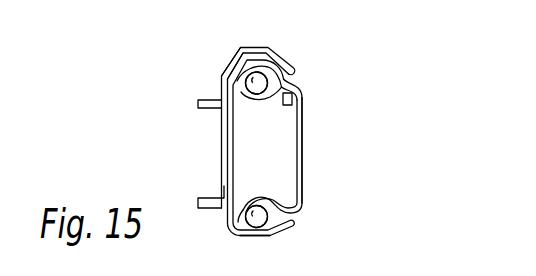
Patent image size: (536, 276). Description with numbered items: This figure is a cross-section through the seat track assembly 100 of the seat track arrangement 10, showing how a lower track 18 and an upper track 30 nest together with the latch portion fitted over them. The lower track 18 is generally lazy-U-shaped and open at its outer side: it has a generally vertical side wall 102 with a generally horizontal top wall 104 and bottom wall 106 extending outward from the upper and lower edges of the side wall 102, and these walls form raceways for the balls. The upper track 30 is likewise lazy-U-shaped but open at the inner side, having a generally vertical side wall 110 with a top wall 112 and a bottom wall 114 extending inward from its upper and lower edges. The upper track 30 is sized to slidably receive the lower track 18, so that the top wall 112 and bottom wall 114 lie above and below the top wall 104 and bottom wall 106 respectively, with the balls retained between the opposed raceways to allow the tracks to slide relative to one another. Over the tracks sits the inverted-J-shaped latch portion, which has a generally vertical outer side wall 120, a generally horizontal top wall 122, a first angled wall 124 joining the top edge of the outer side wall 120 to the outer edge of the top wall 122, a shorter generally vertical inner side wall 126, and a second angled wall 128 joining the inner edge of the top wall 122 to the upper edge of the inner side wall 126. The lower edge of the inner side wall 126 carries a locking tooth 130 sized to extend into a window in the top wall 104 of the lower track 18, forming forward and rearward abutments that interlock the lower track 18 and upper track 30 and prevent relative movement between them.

The drawer slide assembly 10 is at (508, 275).
The lower track 18 is at (303, 177).
The upper track 30 is at (258, 45).
The slide assembly 100 is at (392, 84).
The side wall 102 is at (305, 145).
The top wall 104 is at (261, 106).
The bottom wall 106 is at (258, 200).
The side wall 110 is at (220, 160).
The top wall 112 is at (225, 63).
The bottom wall 114 is at (253, 236).
The outer side wall 120 is at (208, 100).
The top wall 122 is at (252, 44).
The first angled wall 124 is at (221, 68).
The inner side wall 126 is at (300, 82).
The second angled wall 128 is at (282, 66).
The locking tooth 130 is at (299, 104).